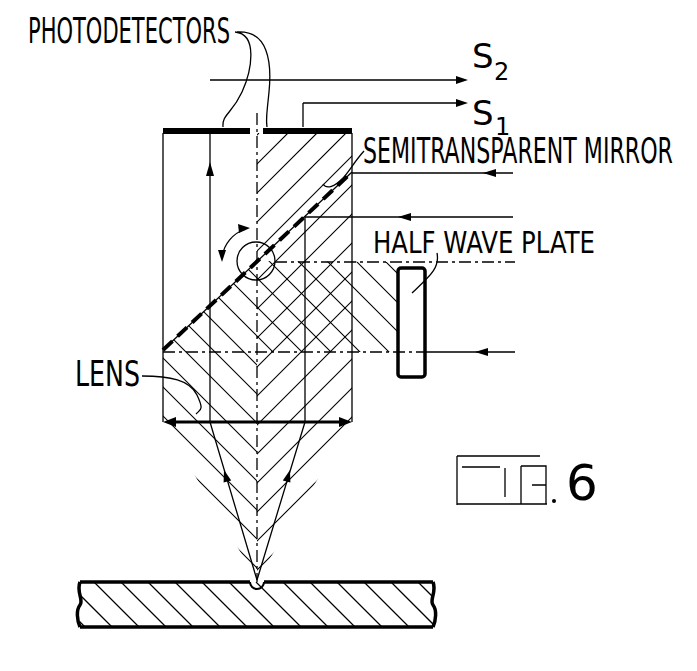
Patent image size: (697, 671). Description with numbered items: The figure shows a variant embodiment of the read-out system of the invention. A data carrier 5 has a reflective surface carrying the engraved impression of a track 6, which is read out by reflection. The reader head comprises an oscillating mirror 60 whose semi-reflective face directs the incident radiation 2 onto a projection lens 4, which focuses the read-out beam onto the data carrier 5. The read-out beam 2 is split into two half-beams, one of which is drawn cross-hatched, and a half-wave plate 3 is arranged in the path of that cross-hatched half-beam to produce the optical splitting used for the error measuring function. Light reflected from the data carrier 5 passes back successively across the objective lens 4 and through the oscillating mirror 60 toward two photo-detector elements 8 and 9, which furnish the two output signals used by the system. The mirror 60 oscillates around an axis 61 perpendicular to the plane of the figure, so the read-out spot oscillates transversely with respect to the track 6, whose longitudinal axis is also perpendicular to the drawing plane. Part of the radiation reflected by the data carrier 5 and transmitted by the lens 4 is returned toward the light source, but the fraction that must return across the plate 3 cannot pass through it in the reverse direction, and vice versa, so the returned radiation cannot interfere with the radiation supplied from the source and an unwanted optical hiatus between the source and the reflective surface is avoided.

The incident radiation 2 is at (513, 217).
The half-wave plate 3 is at (426, 373).
The projection lens 4 is at (325, 426).
The data carrier 5 is at (393, 582).
The track 6 is at (252, 578).
The photo-detector element 8 is at (190, 127).
The photo-detector element 9 is at (268, 127).
The oscillating mirror 60 is at (160, 343).
The axis 61 is at (238, 278).